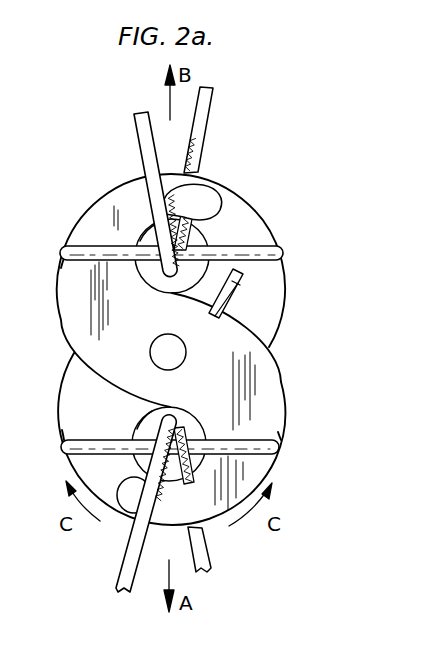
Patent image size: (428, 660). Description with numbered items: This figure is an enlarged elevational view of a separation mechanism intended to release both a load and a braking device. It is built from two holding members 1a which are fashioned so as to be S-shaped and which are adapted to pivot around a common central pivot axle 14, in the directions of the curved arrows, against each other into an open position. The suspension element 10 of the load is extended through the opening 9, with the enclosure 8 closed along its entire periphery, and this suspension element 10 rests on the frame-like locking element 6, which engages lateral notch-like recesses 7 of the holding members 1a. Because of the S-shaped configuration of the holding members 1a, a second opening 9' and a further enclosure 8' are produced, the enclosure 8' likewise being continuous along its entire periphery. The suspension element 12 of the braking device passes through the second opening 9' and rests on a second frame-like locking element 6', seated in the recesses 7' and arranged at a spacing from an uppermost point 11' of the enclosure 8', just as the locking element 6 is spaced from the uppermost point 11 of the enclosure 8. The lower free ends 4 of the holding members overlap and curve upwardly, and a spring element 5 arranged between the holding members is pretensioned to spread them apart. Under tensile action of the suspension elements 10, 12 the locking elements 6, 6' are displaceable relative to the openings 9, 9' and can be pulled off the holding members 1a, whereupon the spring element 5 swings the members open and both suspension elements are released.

The holding members 1a is at (72, 368).
The free ends 4 is at (126, 488).
The spring element 5 is at (234, 296).
The locking element 6 is at (183, 457).
The second locking element 6' is at (188, 248).
The notch-like recesses 7 is at (173, 447).
The second notch-like recesses 7' is at (37, 271).
The enclosure 8 is at (130, 407).
The further enclosure 8' is at (133, 217).
The opening 9 is at (153, 444).
The second opening 9' is at (153, 256).
The suspension element 10 is at (207, 553).
The uppermost point 11 is at (166, 503).
The uppermost point of further enclosure 11' is at (178, 194).
The suspension element of braking device 12 is at (207, 114).
The central pivot axle 14 is at (186, 352).